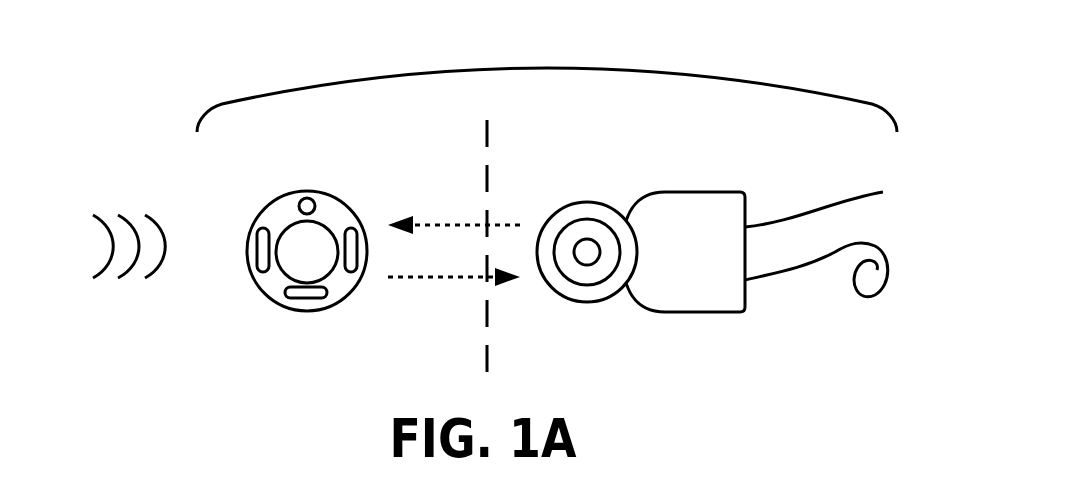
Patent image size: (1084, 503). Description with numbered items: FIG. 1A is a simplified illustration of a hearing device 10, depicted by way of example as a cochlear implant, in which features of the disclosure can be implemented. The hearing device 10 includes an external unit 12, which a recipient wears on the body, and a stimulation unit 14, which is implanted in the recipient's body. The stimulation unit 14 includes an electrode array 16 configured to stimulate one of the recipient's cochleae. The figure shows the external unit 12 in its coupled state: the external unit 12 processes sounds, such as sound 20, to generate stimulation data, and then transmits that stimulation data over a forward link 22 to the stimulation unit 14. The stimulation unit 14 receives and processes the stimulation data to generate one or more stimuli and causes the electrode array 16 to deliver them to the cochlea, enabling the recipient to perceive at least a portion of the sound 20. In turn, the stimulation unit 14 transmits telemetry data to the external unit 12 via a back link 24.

The hearing device 10 is at (547, 68).
The external unit 12 is at (280, 298).
The stimulation unit 14 is at (710, 192).
The electrode array 16 is at (803, 268).
The sound 20 is at (140, 278).
The forward link 22 is at (452, 277).
The back link 24 is at (453, 223).